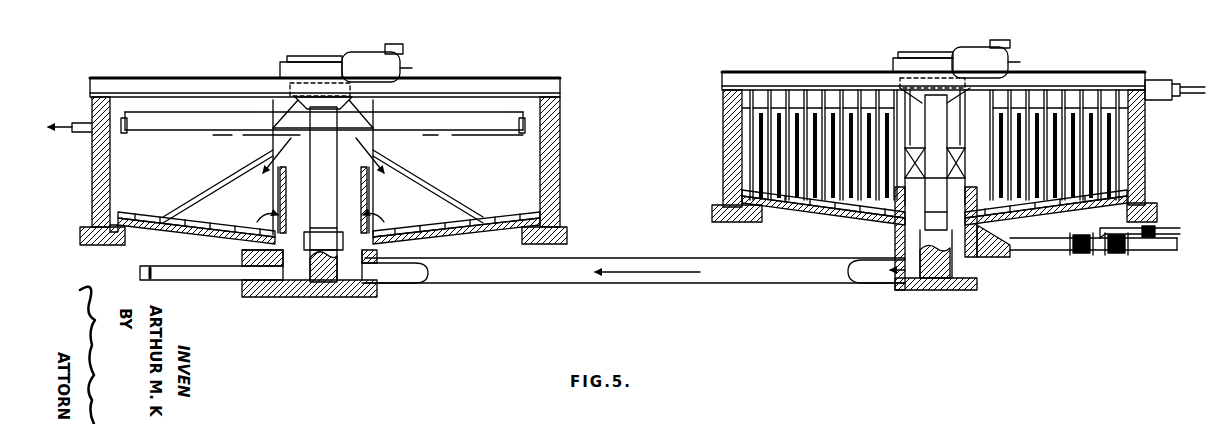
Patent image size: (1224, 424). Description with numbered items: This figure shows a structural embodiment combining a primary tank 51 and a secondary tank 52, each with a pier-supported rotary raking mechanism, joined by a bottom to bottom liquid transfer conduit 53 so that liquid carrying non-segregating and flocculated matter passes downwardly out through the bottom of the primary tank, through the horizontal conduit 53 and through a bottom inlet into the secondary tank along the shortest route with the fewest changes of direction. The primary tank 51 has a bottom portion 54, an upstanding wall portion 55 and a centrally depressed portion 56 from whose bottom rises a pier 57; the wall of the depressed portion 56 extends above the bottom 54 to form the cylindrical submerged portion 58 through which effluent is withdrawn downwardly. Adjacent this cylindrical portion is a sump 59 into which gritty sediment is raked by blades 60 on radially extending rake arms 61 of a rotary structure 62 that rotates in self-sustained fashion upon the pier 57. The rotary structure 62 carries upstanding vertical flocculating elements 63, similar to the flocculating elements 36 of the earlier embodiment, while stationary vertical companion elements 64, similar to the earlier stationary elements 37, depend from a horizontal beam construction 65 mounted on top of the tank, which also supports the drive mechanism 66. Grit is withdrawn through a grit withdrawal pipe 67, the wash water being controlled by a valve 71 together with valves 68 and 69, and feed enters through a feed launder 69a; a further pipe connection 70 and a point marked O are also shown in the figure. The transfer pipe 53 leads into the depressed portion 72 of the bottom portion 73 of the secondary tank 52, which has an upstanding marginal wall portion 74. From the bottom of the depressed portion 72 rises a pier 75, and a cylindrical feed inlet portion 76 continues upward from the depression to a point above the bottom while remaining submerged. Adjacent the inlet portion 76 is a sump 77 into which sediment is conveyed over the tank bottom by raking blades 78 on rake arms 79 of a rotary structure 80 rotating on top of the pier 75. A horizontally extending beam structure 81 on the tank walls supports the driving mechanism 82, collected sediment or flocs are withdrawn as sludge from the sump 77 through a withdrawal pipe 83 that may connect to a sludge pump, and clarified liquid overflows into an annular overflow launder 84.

The flocculating elements 36 is at (742, 170).
The stationary vertical companion elements 37 is at (742, 180).
The primary tank 51 is at (942, 159).
The secondary tank 52 is at (323, 171).
The liquid transfer conduit 53 is at (688, 283).
The bottom portion 54 is at (800, 222).
The upstanding wall portion 55 is at (1147, 153).
The centrally depressed portion 56 is at (960, 280).
The pier 57 is at (937, 162).
The cylindrical submerged portion 58 is at (895, 250).
The sump 59 is at (1002, 258).
The blades 60 is at (850, 218).
The rake arms 61 is at (1110, 190).
The rotary structure 62 is at (960, 118).
The flocculating elements 63 is at (1130, 135).
The stationary vertical companion elements 64 is at (1098, 95).
The horizontal beam construction 65 is at (815, 72).
The drive mechanism 66 is at (975, 52).
The grit withdrawal pipe 67 is at (1050, 252).
The valve 68 is at (1085, 254).
The valve 69 is at (1118, 255).
The feed launder 69a is at (1155, 80).
The bypass pipe 70 is at (1125, 229).
The valve 71 is at (1193, 242).
The depressed portion 72 is at (300, 297).
The bottom portion 73 is at (150, 240).
The upstanding marginal wall portion 74 is at (560, 158).
The pier 75 is at (323, 178).
The cylindrical feed inlet portion 76 is at (369, 206).
The sump 77 is at (268, 285).
The raking blades 78 is at (486, 238).
The rake arms 79 is at (500, 215).
The rotary structure 80 is at (376, 143).
The beam structure 81 is at (510, 78).
The driving mechanism 82 is at (365, 52).
The withdrawal pipe 83 is at (203, 282).
The annular overflow launder 84 is at (118, 120).
The electrode O is at (755, 108).